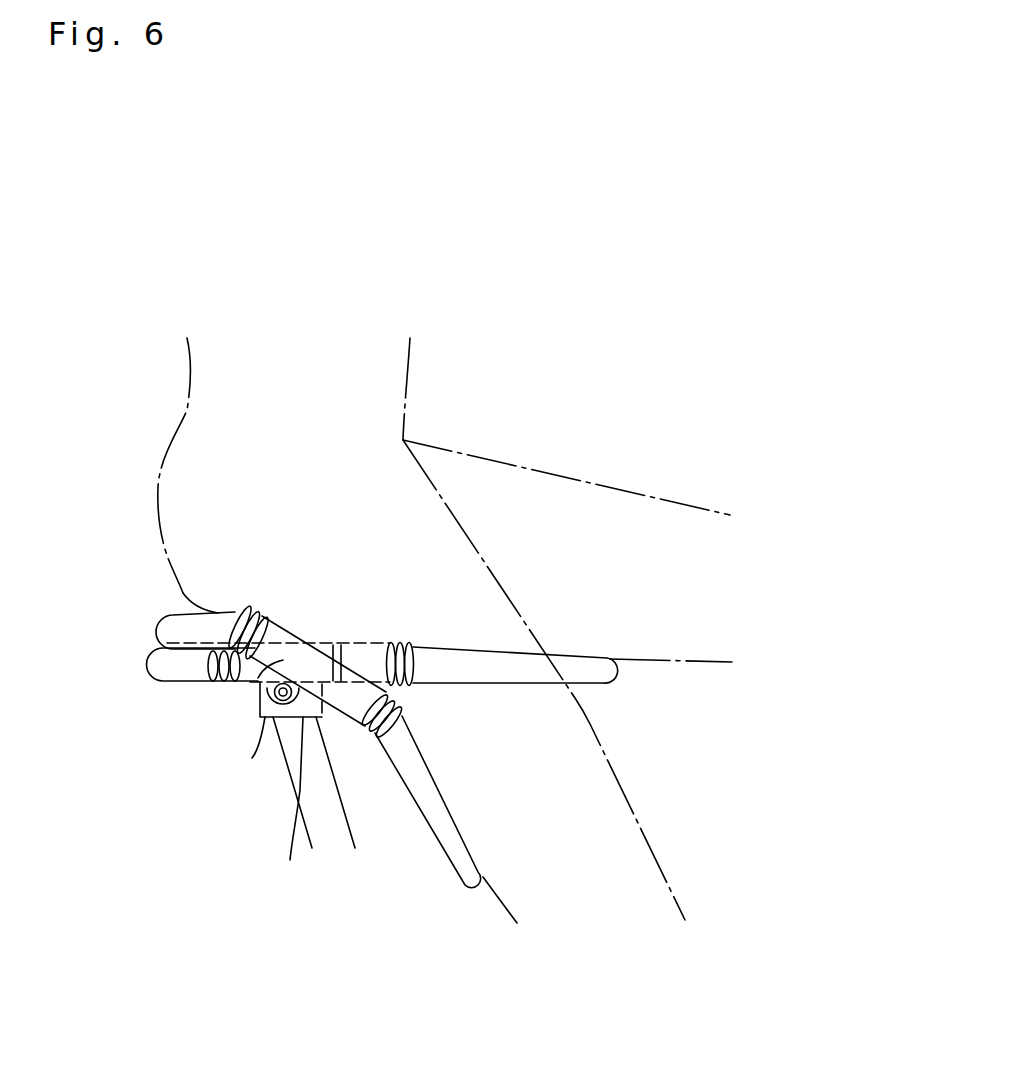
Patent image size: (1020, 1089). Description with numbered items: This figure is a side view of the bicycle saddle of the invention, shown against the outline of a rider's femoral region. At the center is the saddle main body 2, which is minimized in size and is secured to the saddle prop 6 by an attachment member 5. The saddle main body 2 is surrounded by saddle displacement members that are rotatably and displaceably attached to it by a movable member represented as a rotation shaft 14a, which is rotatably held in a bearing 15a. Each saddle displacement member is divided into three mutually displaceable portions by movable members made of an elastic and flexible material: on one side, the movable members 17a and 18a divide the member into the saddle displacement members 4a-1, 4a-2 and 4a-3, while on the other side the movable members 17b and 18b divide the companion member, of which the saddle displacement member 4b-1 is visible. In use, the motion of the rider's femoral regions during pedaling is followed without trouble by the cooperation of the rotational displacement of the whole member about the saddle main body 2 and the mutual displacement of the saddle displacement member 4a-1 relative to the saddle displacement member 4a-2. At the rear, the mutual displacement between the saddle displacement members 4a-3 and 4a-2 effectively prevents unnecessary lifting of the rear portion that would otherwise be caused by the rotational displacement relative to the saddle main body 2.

The saddle main body 2 is at (262, 669).
The saddle displacement member 4a-1 is at (431, 808).
The saddle displacement member 4a-2 is at (258, 702).
The saddle displacement member 4a-3 is at (183, 620).
The saddle displacement member 4b-1 is at (592, 668).
The attachment member 5 is at (282, 718).
The saddle prop 6 is at (316, 802).
The rotation shaft 14a is at (257, 757).
The bearing 15a is at (299, 790).
The movable member 17a is at (368, 732).
The movable member 17b is at (413, 683).
The movable member 18a is at (247, 612).
The movable member 18b is at (207, 680).